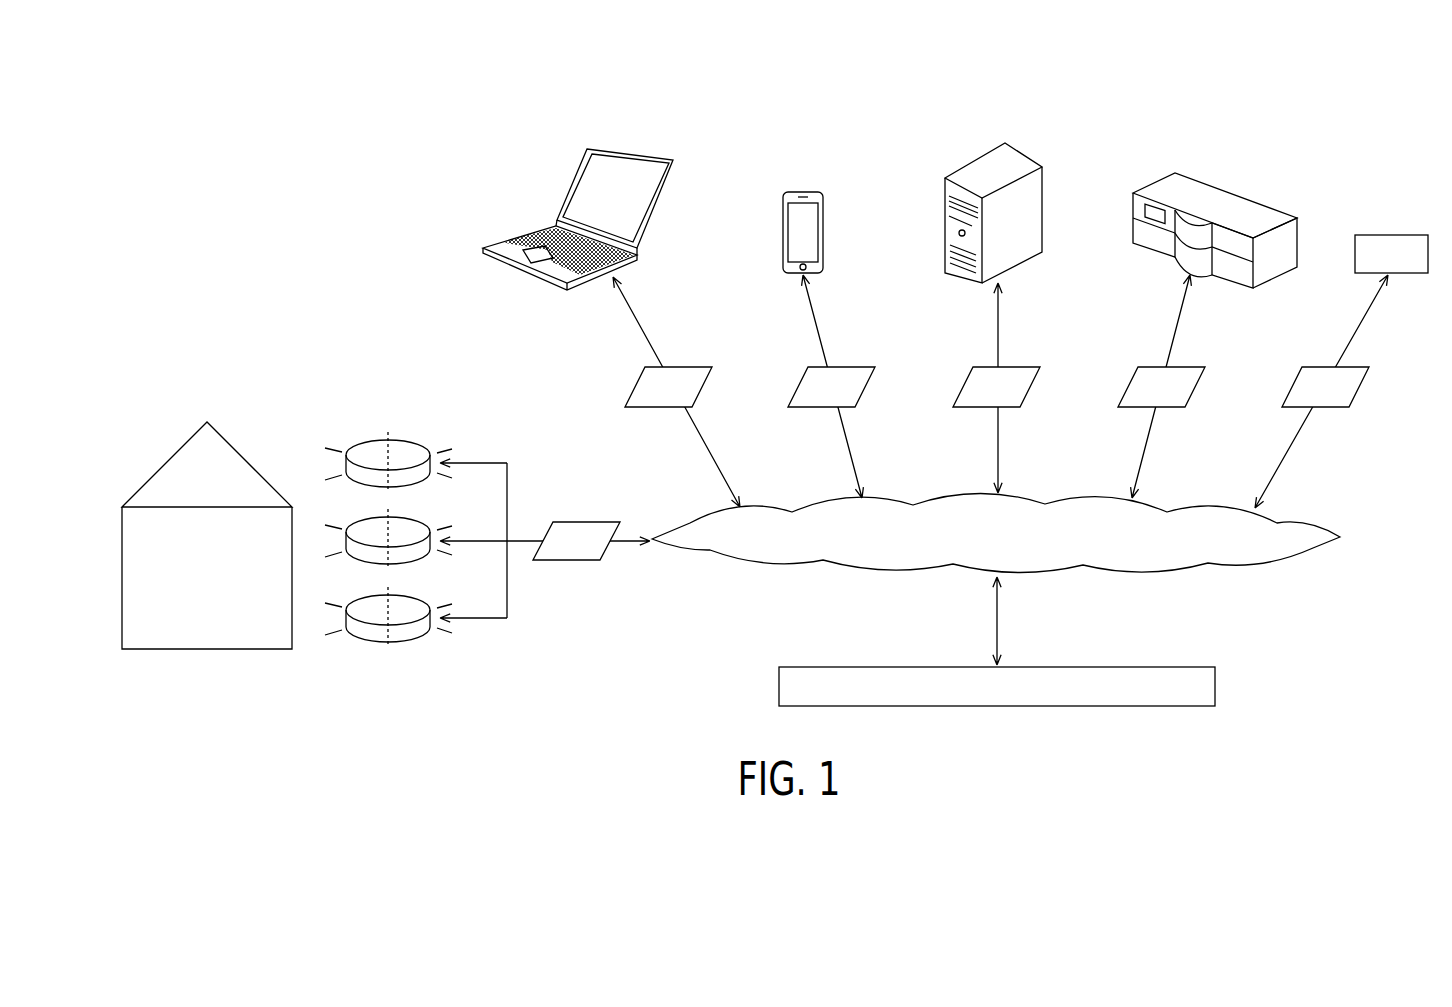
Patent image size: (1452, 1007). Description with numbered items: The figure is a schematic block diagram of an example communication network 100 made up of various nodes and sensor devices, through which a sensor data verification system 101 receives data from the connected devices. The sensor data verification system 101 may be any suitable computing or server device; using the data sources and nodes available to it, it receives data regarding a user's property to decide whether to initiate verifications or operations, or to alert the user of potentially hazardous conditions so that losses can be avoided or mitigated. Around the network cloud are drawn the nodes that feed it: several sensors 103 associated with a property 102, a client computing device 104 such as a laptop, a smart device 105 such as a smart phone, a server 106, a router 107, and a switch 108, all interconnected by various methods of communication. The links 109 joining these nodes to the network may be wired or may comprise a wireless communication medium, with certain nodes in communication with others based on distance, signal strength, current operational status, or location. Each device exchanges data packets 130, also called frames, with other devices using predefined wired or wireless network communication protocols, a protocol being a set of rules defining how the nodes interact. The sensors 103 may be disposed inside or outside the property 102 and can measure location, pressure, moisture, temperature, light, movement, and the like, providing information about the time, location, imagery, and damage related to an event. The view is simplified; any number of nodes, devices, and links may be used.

The communication network 100 is at (1148, 575).
The sensor data verification system 101 is at (1105, 667).
The property 102 is at (170, 460).
The sensors 103 is at (405, 445).
The client computing devices 104 is at (572, 185).
The smart devices 105 is at (802, 190).
The servers 106 is at (1022, 158).
The routers 107 is at (1235, 195).
The switches 108 is at (1391, 254).
The links 109 is at (705, 453).
The data packets 130 is at (951, 463).